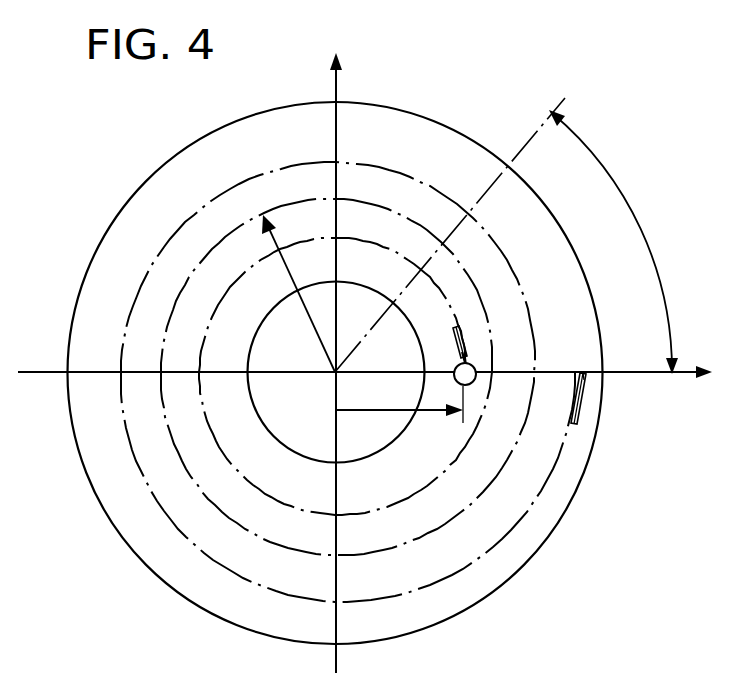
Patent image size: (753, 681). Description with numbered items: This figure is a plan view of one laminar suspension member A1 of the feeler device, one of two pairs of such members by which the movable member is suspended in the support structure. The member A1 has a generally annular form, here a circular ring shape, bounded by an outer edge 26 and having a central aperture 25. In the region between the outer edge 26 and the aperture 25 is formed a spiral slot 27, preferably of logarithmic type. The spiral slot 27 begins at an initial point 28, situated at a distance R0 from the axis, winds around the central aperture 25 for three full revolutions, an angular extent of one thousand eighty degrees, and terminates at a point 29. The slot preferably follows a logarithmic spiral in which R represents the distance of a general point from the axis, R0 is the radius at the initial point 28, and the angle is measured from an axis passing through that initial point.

The central aperture 25 is at (272, 433).
The outer edge 26 is at (113, 222).
The spiral slot 27 is at (465, 351).
The initial point 28 is at (454, 373).
The terminal point 29 is at (583, 372).
The laminar suspension member A1 is at (464, 112).
The distance of general point from the axis R is at (307, 317).
The radius at the initial point R0 is at (378, 410).